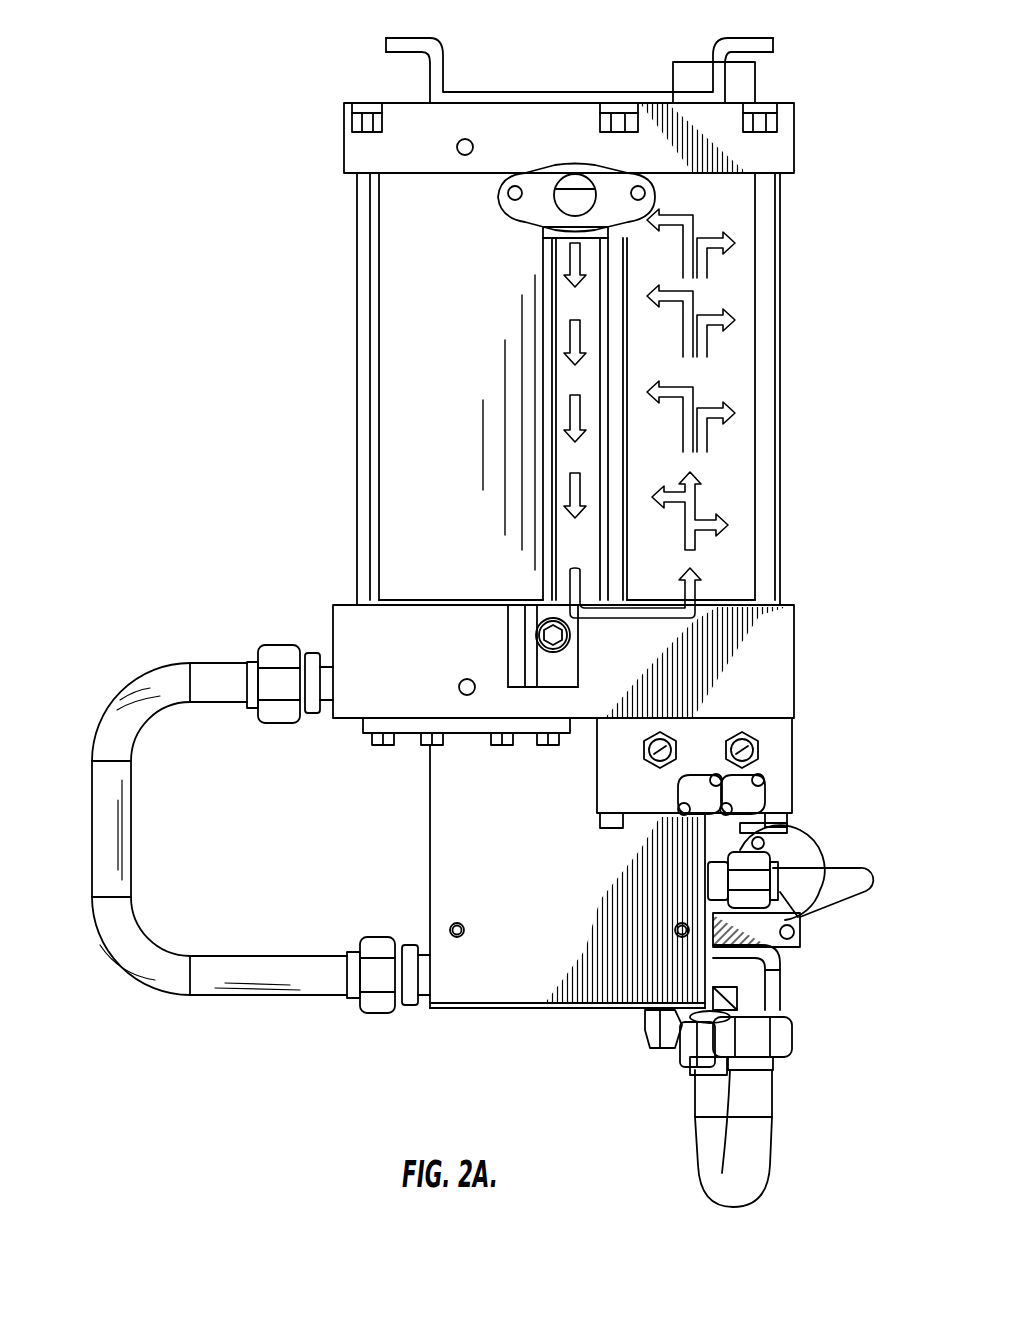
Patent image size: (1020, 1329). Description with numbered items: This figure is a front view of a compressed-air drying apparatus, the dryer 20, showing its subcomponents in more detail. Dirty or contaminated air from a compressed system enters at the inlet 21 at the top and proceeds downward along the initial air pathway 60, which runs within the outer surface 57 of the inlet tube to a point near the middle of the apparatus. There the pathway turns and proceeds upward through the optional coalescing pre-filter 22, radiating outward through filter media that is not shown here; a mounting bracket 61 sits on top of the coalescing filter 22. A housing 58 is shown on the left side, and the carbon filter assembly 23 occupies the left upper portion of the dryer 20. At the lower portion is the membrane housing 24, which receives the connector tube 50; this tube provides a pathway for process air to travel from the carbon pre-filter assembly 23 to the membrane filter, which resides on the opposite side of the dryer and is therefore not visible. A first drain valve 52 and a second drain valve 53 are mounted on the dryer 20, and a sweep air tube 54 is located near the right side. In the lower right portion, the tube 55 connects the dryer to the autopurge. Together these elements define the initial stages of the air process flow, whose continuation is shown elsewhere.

The dryer 20 is at (860, 93).
The inlet 21 is at (604, 205).
The coalescing pre-filter 22 is at (728, 473).
The carbon filter assembly 23 is at (415, 477).
The membrane housing 24 is at (510, 960).
The connector tube 50 is at (110, 818).
The first drain valve 52 is at (700, 785).
The second drain valve 53 is at (750, 796).
The sweep air tube 54 is at (845, 878).
The tube 55 is at (755, 1157).
The outer surface of the inlet tube 57 is at (555, 300).
The housing 58 is at (357, 203).
The initial air pathway 60 is at (575, 345).
The mounting bracket 61 is at (442, 78).